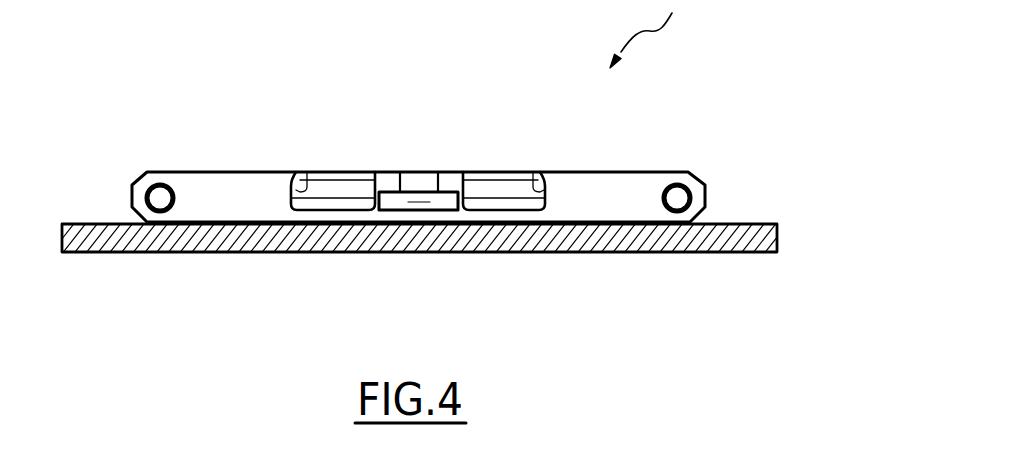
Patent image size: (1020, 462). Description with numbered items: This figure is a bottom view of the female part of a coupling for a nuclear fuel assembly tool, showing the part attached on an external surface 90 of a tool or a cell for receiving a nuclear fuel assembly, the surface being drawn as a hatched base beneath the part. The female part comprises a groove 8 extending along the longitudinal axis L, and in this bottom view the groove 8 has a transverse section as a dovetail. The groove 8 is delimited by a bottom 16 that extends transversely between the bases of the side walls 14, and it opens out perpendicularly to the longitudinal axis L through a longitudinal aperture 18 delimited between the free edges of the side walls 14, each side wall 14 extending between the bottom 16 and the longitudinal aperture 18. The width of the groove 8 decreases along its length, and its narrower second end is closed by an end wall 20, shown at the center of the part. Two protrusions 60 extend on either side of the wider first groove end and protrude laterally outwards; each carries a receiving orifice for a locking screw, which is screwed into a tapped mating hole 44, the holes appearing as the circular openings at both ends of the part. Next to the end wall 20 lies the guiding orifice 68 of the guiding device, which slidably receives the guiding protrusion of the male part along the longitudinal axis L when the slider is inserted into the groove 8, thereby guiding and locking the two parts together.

The groove 8 is at (458, 157).
The side walls 14 is at (313, 180).
The bottom 16 is at (335, 200).
The longitudinal aperture 18 is at (334, 160).
The end wall 20 is at (424, 185).
The tapped mating hole 44 is at (156, 194).
The protrusions 60 is at (213, 188).
The guiding orifice 68 is at (446, 203).
The external surface 90 is at (733, 212).
The longitudinal axis L is at (420, 200).